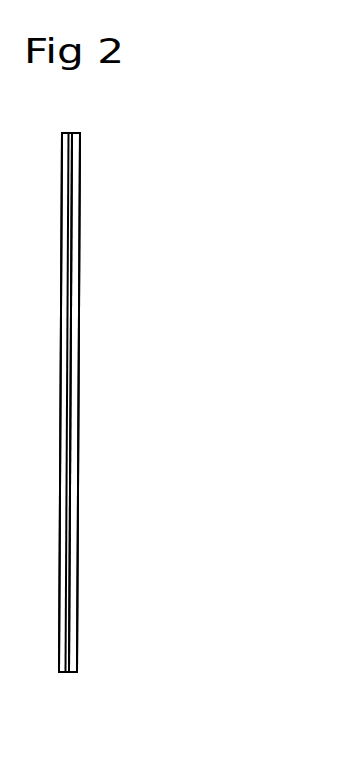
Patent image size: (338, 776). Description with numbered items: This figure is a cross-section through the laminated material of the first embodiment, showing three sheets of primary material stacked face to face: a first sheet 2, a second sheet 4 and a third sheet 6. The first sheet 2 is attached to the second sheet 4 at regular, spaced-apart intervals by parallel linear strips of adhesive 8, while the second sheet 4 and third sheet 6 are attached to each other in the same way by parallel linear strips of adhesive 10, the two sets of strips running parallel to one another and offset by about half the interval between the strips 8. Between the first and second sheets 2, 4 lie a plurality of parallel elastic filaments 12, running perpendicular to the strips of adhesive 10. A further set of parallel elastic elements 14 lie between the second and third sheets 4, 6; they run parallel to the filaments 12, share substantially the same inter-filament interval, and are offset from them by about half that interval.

The first sheet 2 is at (58, 666).
The second sheet 4 is at (65, 673).
The third sheet 6 is at (78, 671).
The strips of adhesive 8 is at (62, 133).
The strips of adhesive 10 is at (80, 133).
The elastic filaments 12 is at (69, 183).
The elastic elements 14 is at (78, 228).